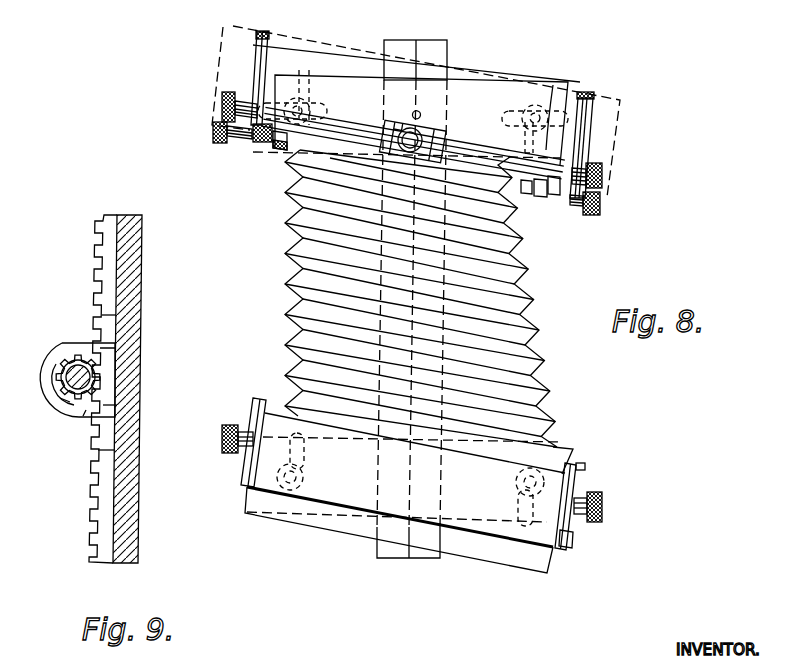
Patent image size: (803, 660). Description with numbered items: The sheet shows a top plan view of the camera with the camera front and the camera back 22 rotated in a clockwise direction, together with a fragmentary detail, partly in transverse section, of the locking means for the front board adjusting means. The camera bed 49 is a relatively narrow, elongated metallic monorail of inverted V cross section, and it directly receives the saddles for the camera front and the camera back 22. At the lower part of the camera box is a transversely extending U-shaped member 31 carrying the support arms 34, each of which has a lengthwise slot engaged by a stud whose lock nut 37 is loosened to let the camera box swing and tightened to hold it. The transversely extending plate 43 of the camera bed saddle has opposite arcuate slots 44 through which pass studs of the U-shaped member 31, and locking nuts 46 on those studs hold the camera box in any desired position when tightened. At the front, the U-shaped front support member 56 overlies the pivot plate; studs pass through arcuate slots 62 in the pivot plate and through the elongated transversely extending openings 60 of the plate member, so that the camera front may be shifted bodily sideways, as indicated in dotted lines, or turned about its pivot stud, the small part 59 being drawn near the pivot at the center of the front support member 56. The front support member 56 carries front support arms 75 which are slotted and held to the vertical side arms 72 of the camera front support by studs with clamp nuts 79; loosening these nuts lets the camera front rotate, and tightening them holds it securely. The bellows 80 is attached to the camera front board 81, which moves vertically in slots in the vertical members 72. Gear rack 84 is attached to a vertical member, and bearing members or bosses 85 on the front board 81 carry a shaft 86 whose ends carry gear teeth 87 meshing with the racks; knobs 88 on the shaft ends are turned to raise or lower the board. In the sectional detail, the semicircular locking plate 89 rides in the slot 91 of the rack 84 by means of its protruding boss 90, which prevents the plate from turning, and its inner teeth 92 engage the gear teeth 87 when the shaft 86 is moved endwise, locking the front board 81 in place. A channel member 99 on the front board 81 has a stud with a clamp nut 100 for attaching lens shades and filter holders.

In FIG. 8, the camera back 22 is at (493, 548).
In FIG. 8, the U-shaped member 31 is at (574, 540).
In FIG. 8, the support arms 34 is at (258, 412).
In FIG. 8, the lock nut 37 is at (222, 438).
In FIG. 8, the transversely extending plate 43 is at (574, 454).
In FIG. 8, the arcuate slots 44 is at (303, 460).
In FIG. 8, the locking nuts 46 is at (303, 489).
In FIG. 8, the camera bed 49 is at (447, 58).
In FIG. 8, the U-shaped front support member 56 is at (283, 60).
In FIG. 8, the pin 59 is at (417, 113).
In FIG. 8, the elongated transversely extending openings 60 is at (312, 115).
In FIG. 8, the arcuate slots 62 is at (303, 75).
In FIG. 9, the vertical side arms 72 is at (134, 271).
In FIG. 8, the front support arm 75 is at (260, 52).
In FIG. 8, the clamp nuts 79 is at (222, 104).
In FIG. 8, the bellows 80 is at (509, 271).
In FIG. 8, the camera front board 81 is at (357, 131).
In FIG. 9, the gear rack 84 is at (98, 263).
In FIG. 8, the bearing members or bosses 85 is at (279, 150).
In FIG. 8, the shaft 86 is at (526, 194).
In FIG. 8, the gear teeth 87 is at (258, 142).
In FIG. 9, the gear teeth 87 is at (78, 360).
In FIG. 8, the knobs 88 is at (213, 134).
In FIG. 9, the locking plate 89 is at (56, 356).
In FIG. 9, the protruding boss 90 is at (110, 405).
In FIG. 9, the slot 91 is at (100, 442).
In FIG. 9, the teeth 92 is at (115, 348).
In FIG. 8, the channel member 99 is at (397, 128).
In FIG. 8, the clamp nut 100 is at (426, 132).